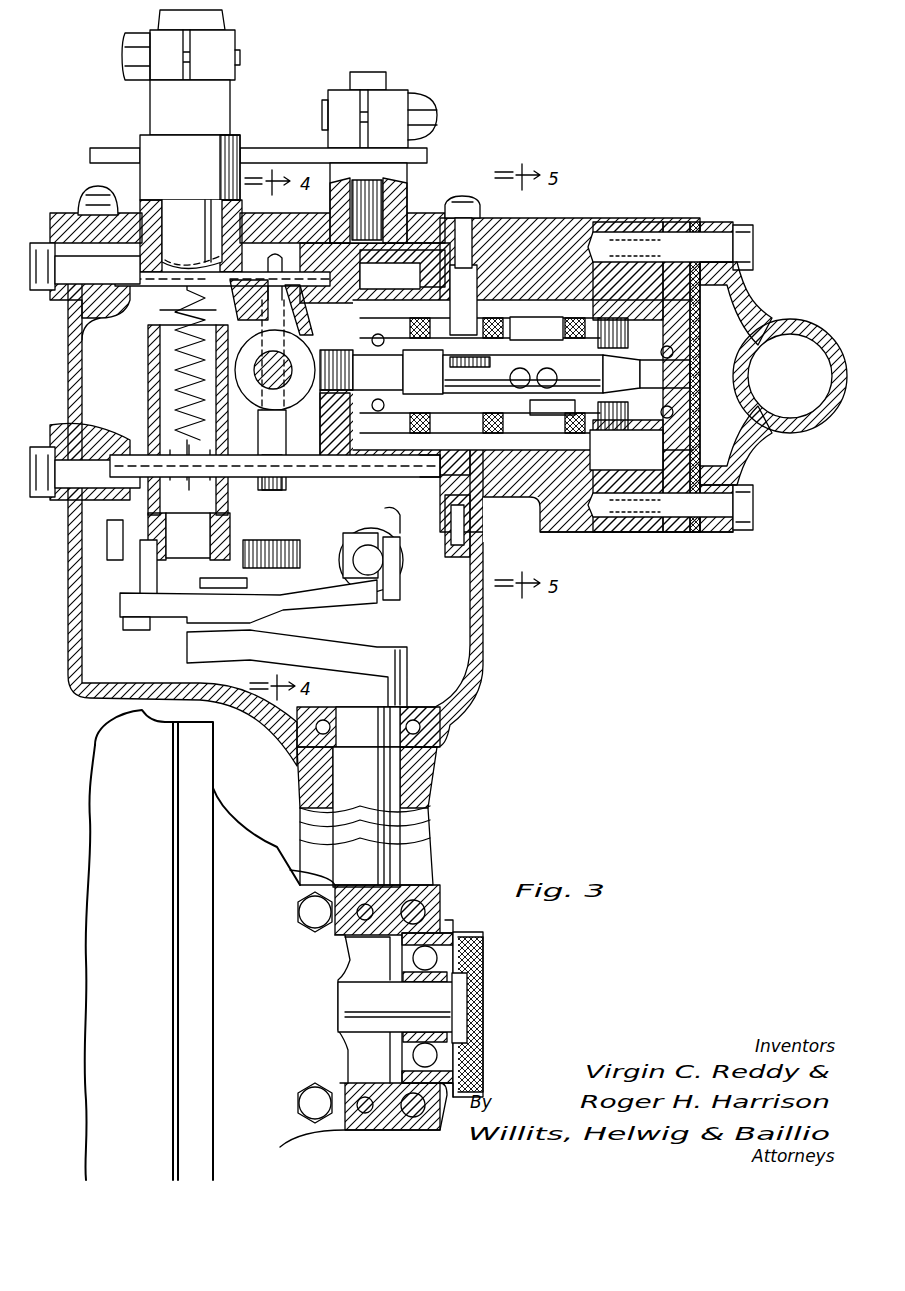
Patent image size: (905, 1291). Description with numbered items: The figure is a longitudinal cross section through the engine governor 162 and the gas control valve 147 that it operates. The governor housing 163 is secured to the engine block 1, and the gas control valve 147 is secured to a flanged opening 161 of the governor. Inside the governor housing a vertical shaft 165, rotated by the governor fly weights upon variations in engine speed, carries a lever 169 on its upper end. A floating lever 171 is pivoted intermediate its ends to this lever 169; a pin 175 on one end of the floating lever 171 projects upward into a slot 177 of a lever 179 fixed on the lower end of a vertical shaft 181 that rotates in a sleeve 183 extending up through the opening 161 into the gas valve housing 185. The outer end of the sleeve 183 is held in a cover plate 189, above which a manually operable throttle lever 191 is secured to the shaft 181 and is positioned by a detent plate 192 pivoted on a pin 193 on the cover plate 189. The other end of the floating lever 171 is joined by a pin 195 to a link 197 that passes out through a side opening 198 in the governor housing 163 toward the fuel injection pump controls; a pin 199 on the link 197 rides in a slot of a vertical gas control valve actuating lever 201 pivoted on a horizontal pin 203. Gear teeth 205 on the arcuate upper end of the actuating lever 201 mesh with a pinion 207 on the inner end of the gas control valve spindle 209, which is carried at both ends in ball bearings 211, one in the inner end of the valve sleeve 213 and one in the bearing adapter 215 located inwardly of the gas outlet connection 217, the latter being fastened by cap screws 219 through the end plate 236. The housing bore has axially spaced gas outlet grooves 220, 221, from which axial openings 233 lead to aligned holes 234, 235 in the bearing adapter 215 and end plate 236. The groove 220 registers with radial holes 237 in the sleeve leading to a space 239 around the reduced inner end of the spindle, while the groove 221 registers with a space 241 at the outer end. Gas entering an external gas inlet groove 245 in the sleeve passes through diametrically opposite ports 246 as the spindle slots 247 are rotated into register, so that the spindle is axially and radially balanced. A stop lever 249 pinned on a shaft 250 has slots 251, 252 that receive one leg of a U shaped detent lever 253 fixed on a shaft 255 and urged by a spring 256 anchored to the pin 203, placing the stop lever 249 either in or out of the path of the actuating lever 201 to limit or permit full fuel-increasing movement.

The engine block 1 is at (105, 768).
The gas control valve 147 is at (620, 245).
The flanged opening 161 is at (100, 378).
The engine governor 162 is at (108, 703).
The governor housing 163 is at (440, 830).
The vertical shaft 165 is at (305, 806).
The lever 169 is at (303, 650).
The floating lever 171 is at (278, 607).
The pin 175 is at (224, 594).
The slot 177 is at (140, 596).
The lever 179 is at (117, 552).
The vertical shaft 181 is at (184, 214).
The sleeve 183 is at (140, 197).
The gas valve housing 185 is at (88, 330).
The cover plate 189 is at (413, 232).
The throttle lever 191 is at (216, 45).
The detent plate 192 is at (262, 150).
The pin 193 is at (367, 75).
The pin 195 is at (393, 514).
The link 197 is at (385, 560).
The side opening 198 is at (398, 545).
The pin 199 is at (300, 566).
The gas control valve actuating lever 201 is at (352, 527).
The pin 203 is at (250, 492).
The gear teeth 205 is at (312, 398).
The pinion 207 is at (340, 360).
The gas control valve spindle 209 is at (523, 392).
The ball bearing 211 is at (362, 330).
The valve sleeve 213 is at (565, 395).
The bearing adapter 215 is at (672, 232).
The gas outlet connection 217 is at (762, 322).
The cap screws 219 is at (708, 246).
The gas outlet groove 220 is at (478, 264).
The gas outlet groove 221 is at (598, 318).
The axial openings 233 is at (588, 495).
The hole 234 is at (710, 478).
The hole 235 is at (713, 460).
The end plate 236 is at (698, 380).
The radial holes 237 is at (468, 330).
The space 239 is at (470, 355).
The space 241 is at (700, 426).
The gas inlet groove 245 is at (545, 322).
The ports 246 is at (556, 364).
The slot 247 is at (545, 418).
The stop lever 249 is at (283, 520).
The shaft 250 is at (258, 410).
The slot 251 is at (240, 320).
The slot 252 is at (300, 322).
The detent lever 253 is at (274, 255).
The shaft 255 is at (290, 280).
The spring 256 is at (186, 418).